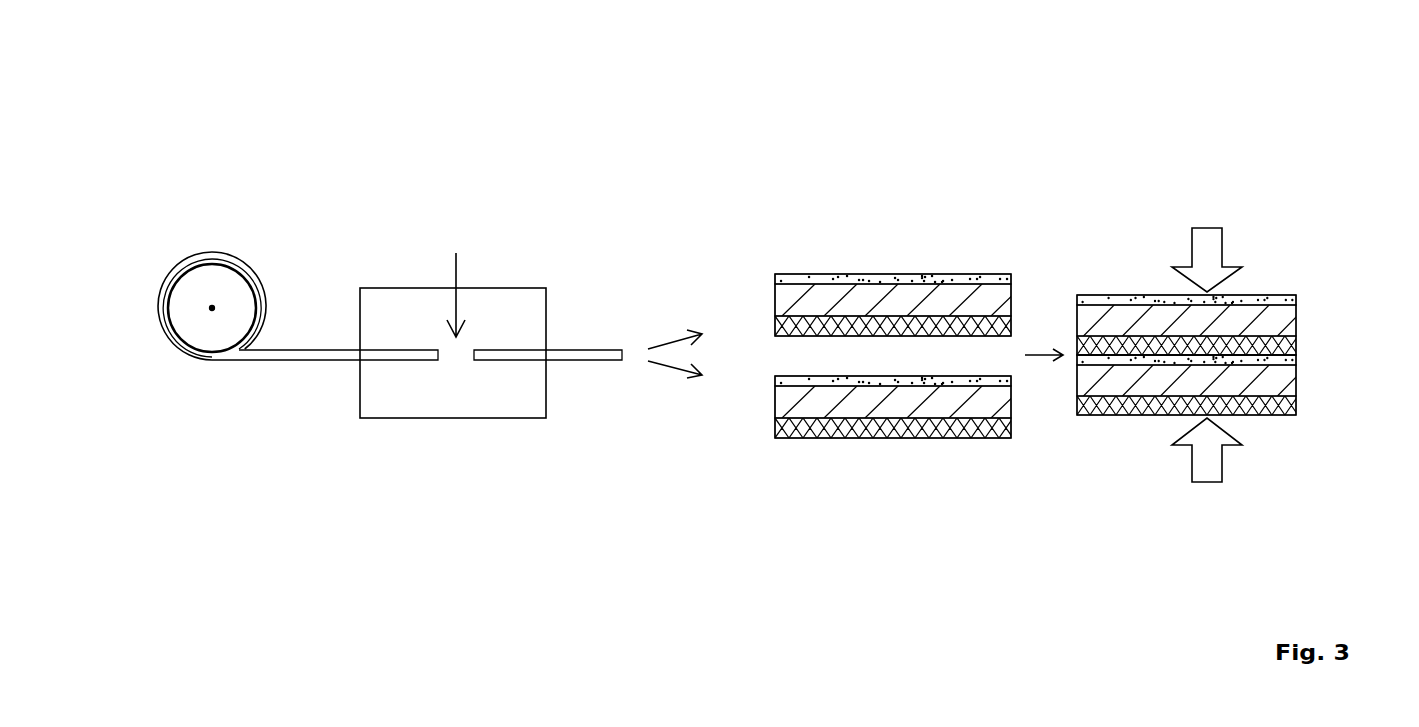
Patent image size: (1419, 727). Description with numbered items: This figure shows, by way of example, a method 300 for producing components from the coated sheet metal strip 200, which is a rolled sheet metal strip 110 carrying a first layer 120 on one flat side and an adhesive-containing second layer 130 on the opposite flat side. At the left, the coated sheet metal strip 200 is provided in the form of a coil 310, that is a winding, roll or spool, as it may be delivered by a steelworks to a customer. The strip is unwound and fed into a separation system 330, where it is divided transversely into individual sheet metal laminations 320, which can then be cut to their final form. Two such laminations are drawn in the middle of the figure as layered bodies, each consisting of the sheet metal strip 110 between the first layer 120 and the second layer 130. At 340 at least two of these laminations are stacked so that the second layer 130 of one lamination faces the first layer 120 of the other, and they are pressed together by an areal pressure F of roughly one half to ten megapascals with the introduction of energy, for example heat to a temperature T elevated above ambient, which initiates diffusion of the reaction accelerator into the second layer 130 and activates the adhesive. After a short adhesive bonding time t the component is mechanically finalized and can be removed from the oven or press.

The method 300 is at (703, 112).
The coated sheet metal strip 200 is at (193, 260).
The coil 310 is at (225, 253).
The sheet metal laminations 320 is at (578, 354).
The separation system 330 is at (502, 287).
The first layer 120 is at (847, 277).
The rolled sheet metal strip 110 is at (1007, 293).
The second layer 130 is at (775, 317).
The stacking and adhesive bonding operation 340 is at (1192, 140).